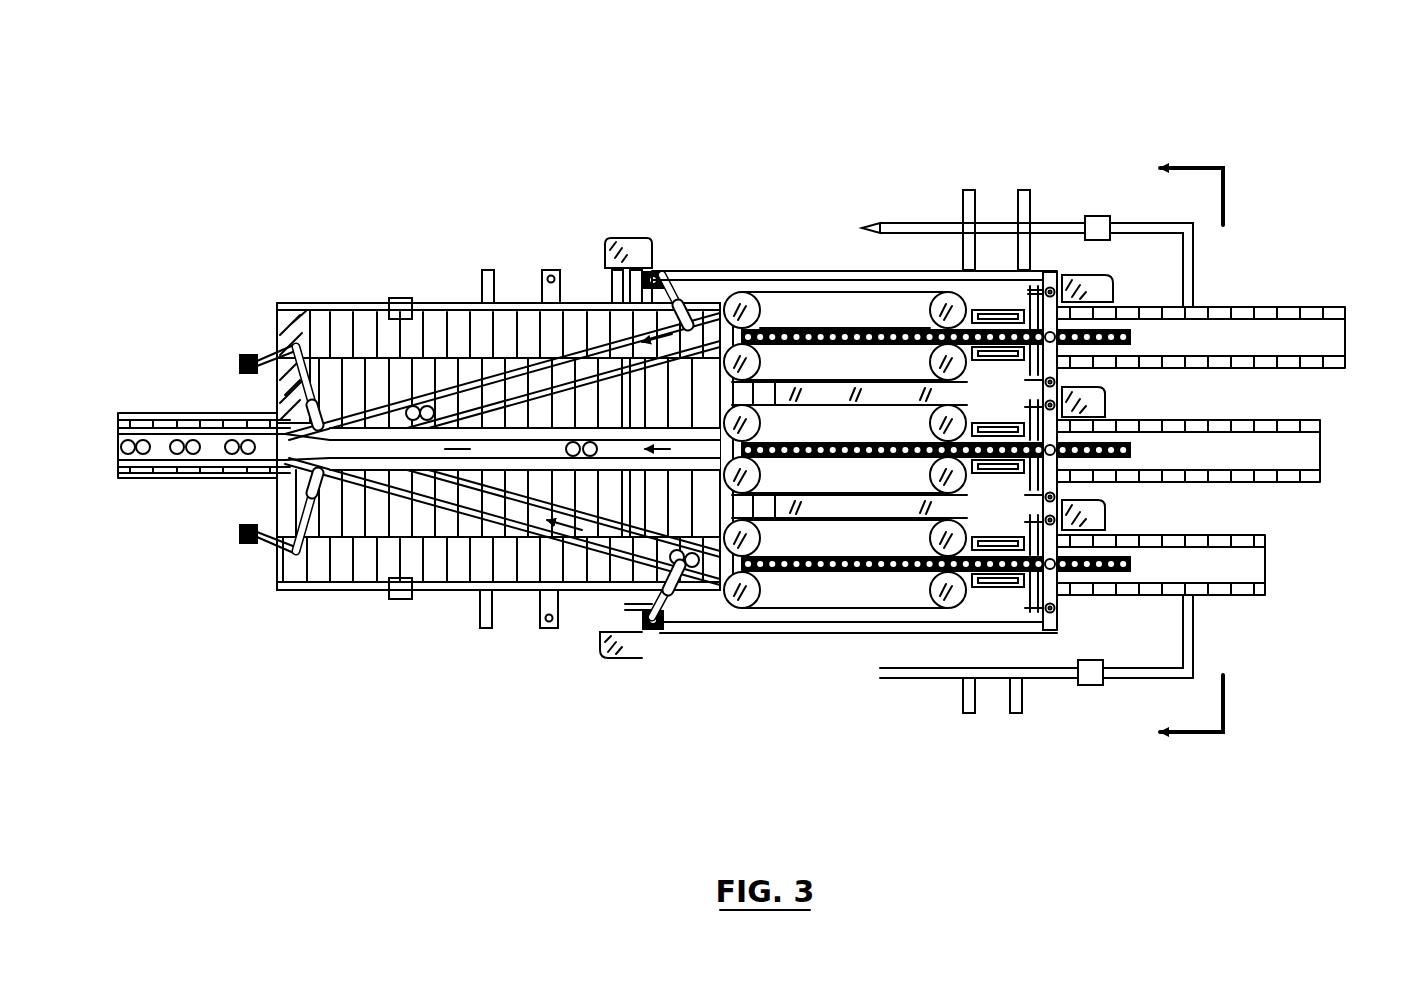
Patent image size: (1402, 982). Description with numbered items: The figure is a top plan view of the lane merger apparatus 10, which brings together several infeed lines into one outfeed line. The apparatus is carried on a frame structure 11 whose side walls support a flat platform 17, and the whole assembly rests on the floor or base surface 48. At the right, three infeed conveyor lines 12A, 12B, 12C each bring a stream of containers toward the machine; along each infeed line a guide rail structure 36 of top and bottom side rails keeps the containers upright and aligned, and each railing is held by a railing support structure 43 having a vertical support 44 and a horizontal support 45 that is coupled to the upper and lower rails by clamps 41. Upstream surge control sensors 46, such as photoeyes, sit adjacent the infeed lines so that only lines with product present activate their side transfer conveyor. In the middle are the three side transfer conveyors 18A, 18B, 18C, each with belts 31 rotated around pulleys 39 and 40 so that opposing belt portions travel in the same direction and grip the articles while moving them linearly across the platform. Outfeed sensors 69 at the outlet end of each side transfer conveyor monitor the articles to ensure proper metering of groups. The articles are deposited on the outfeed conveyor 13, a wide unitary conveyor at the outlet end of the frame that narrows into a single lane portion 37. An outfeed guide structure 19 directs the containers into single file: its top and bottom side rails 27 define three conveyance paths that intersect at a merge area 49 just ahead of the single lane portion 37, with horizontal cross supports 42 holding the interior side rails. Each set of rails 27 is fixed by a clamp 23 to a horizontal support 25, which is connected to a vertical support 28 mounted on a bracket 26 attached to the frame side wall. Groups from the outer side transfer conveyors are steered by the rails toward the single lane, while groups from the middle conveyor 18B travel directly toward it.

The lane merger apparatus 10 is at (438, 155).
The frame structure 11 is at (485, 275).
The infeed conveyor line 12A is at (1248, 585).
The infeed conveyor line 12B is at (1199, 469).
The infeed conveyor line 12C is at (1300, 330).
The outfeed conveyor line 13 is at (432, 318).
The platform 17 is at (1039, 495).
The side transfer conveyor 18A is at (797, 640).
The side transfer conveyor 18B is at (902, 478).
The side transfer conveyor 18C is at (927, 417).
The outfeed guide structure 19 is at (692, 250).
The clamp 23 is at (475, 471).
The horizontal support 25 is at (318, 372).
The bracket 26 is at (552, 270).
The side rails 27 is at (409, 420).
The vertical support 28 is at (248, 355).
The belts 31 is at (815, 301).
The guide rail structure 36 is at (1218, 422).
The single lane portion 37 is at (150, 456).
The pulley 39 is at (760, 366).
The pulley 40 is at (932, 472).
The clamps 41 is at (1075, 378).
The horizontal cross supports 42 is at (629, 400).
The railing support structure 43 is at (1058, 608).
The vertical support 44 is at (1040, 292).
The horizontal support 45 is at (1030, 545).
The surge control sensors 46 is at (1085, 272).
The base surface 48 is at (1128, 279).
The merge area 49 is at (366, 462).
The outfeed sensors 69 is at (628, 238).